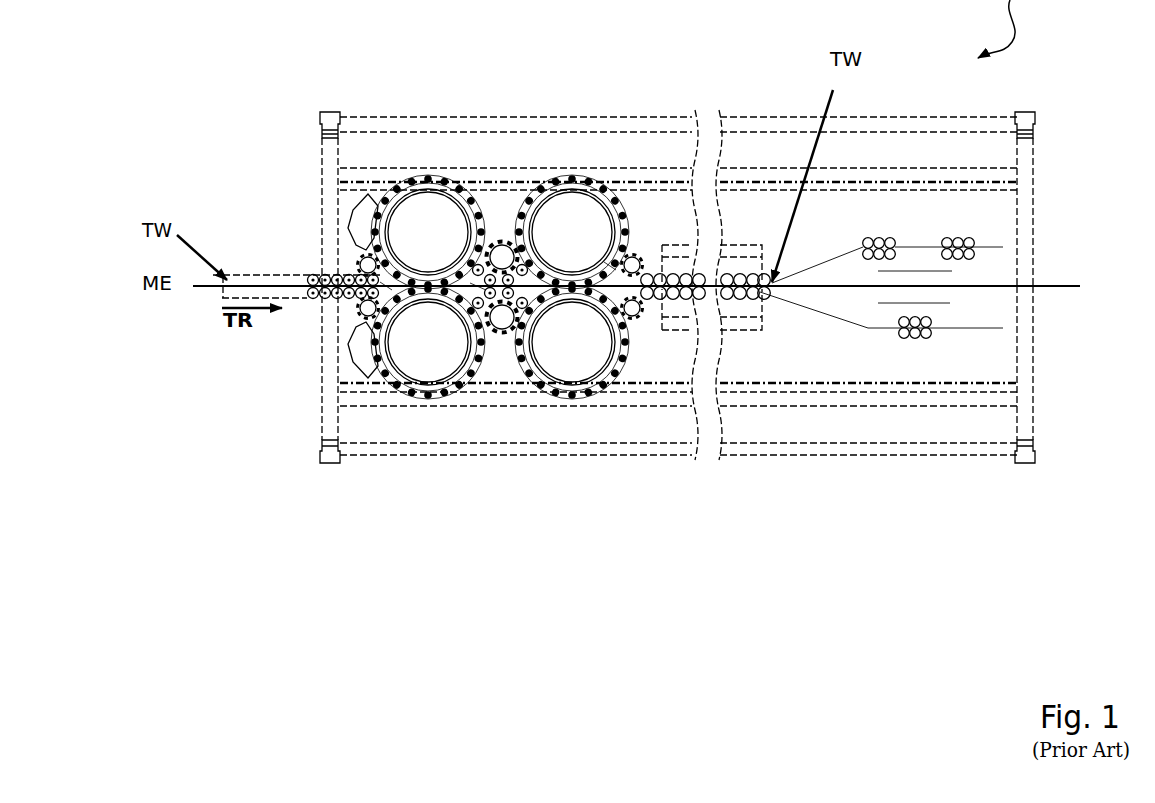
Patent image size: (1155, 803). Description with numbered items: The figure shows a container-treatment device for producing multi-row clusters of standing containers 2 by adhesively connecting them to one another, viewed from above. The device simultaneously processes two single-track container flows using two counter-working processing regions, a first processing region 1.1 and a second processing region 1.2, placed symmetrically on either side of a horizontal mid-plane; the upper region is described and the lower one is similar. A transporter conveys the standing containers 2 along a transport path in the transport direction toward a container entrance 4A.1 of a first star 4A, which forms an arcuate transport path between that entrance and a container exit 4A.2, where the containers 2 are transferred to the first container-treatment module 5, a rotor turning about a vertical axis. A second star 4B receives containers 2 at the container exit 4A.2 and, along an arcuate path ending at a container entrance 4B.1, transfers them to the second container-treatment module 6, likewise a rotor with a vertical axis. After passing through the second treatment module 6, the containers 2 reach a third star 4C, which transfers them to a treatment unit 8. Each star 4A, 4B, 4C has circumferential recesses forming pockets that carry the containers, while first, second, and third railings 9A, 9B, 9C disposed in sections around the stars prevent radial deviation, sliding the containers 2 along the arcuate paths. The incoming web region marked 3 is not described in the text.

The first processing region 1.1 is at (305, 143).
The second processing region 1.2 is at (312, 368).
The container 2 is at (307, 298).
The incoming material web 3 is at (275, 275).
The first star 4A is at (360, 257).
The container entrance 4A.1 is at (357, 273).
The container exit 4A.2 is at (363, 242).
The second star 4B is at (502, 240).
The container entrance 4B.1 is at (531, 267).
The third star 4C is at (610, 265).
The first container-treatment module 5 is at (425, 158).
The second container-treatment module 6 is at (575, 158).
The treatment unit 8 is at (727, 243).
The first railing 9A is at (390, 287).
The second railing 9B is at (478, 287).
The third railing 9C is at (610, 265).